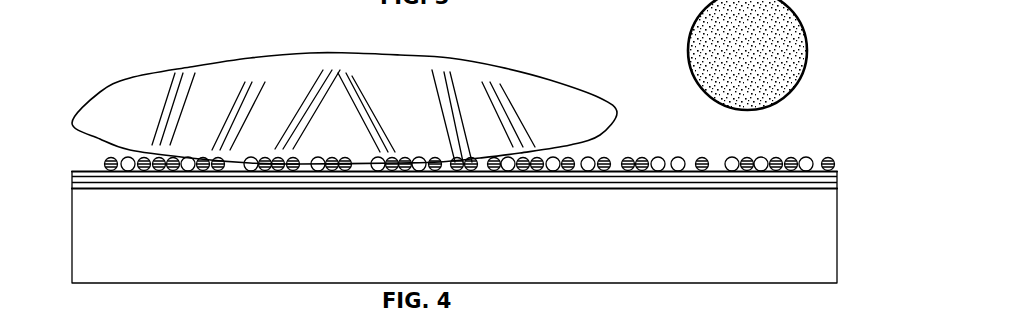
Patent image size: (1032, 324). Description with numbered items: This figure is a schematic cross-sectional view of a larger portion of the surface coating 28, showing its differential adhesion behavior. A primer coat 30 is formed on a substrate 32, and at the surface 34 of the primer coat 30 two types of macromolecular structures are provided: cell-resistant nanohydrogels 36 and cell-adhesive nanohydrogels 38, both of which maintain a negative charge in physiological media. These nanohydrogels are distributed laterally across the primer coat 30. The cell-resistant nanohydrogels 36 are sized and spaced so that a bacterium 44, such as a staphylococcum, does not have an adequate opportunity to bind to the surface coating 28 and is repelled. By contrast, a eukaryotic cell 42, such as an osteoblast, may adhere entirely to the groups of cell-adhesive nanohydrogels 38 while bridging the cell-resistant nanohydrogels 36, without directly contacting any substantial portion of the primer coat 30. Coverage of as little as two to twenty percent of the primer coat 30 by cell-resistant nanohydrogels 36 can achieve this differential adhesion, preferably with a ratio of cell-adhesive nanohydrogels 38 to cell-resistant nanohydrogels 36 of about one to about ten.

In FIG. 4, the surface coating 28 is at (441, 199).
In FIG. 4, the primer coat 30 is at (72, 180).
In FIG. 4, the substrate 32 is at (72, 227).
In FIG. 4, the surface 34 is at (87, 172).
In FIG. 4, the cell-resistant nanohydrogels 36 is at (125, 171).
In FIG. 4, the cell-adhesive nanohydrogels 38 is at (173, 171).
In FIG. 4, the eukaryotic cell 42 is at (250, 58).
In FIG. 3, the bacterium 44 is at (798, 20).